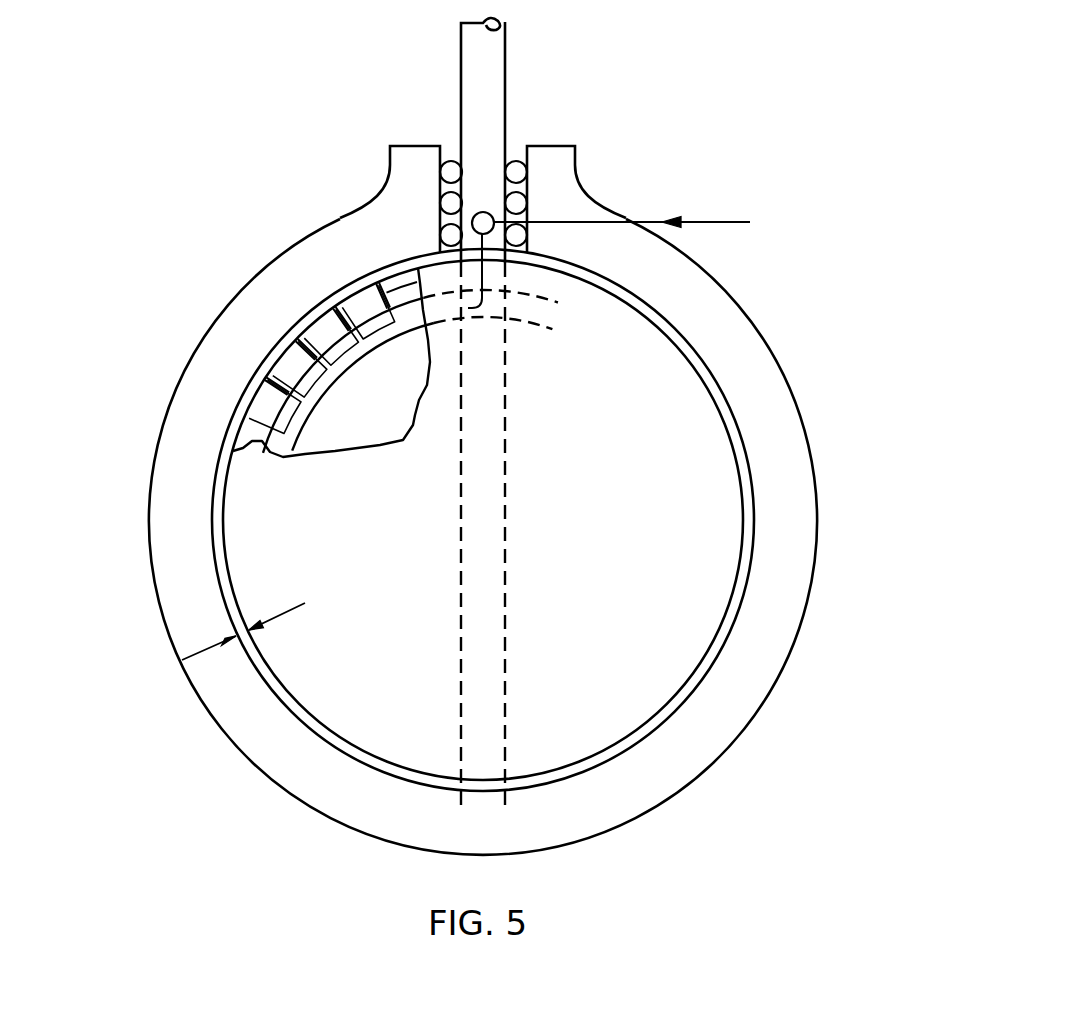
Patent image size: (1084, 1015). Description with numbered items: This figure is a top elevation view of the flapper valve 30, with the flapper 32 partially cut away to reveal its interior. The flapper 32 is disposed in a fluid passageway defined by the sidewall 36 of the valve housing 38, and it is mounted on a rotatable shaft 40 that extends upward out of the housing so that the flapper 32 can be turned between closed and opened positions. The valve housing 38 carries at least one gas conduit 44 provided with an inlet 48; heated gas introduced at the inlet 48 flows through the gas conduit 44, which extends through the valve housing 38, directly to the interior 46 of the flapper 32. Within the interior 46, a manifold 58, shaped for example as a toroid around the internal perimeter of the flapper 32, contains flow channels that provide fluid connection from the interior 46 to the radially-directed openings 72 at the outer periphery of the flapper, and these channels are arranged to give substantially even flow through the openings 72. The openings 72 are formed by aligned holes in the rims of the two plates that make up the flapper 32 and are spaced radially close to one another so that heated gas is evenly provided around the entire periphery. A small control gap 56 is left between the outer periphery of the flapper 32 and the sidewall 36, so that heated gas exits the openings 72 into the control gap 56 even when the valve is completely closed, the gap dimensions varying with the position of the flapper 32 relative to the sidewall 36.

The flapper valve 30 is at (212, 778).
The flapper 32 is at (717, 408).
The sidewall 36 is at (212, 530).
The valve housing 38 is at (795, 542).
The rotatable shaft 40 is at (480, 90).
The gas conduit 44 is at (628, 220).
The interior of the flapper 46 is at (387, 397).
The inlet 48 is at (730, 222).
The control gap 56 is at (225, 610).
The manifold 58 is at (288, 435).
The radially-directed openings 72 is at (260, 378).